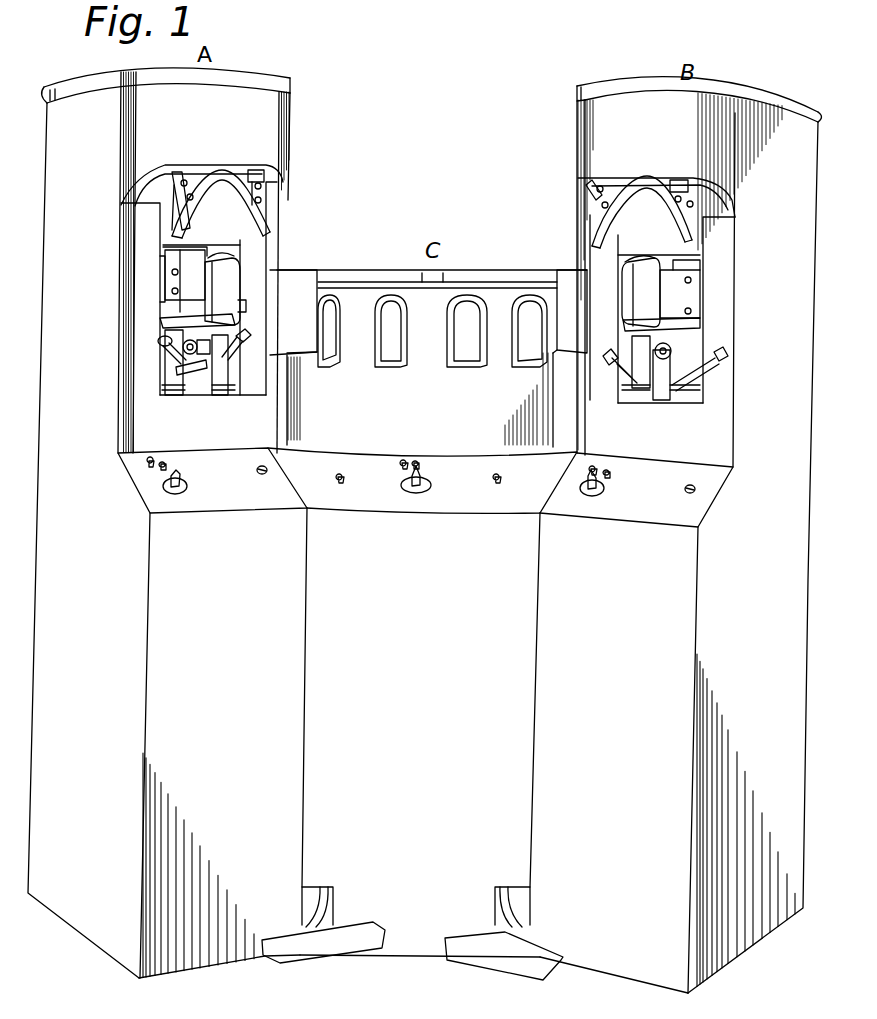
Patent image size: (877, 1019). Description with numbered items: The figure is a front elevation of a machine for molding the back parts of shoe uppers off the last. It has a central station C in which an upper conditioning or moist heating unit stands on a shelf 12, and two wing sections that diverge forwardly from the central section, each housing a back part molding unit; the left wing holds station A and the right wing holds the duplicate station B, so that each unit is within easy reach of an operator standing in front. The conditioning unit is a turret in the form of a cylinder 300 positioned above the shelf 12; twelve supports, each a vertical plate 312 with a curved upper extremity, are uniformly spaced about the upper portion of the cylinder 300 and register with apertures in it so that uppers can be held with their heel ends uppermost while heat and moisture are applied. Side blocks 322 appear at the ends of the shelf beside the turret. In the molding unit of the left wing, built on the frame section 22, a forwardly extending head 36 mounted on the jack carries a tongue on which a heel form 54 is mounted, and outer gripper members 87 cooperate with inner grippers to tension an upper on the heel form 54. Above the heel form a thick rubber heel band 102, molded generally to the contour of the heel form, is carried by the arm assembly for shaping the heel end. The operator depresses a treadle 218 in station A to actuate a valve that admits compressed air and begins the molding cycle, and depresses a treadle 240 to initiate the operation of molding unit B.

The frame section 22 is at (82, 922).
The heel band 102 is at (228, 190).
The head 36 is at (173, 285).
The heel form 54 is at (207, 288).
The outer gripper members 87 is at (162, 342).
The shelf 12 is at (565, 445).
The side support block 322 is at (297, 283).
The cylinder 300 is at (467, 437).
The vertical plate 312 is at (393, 328).
The treadle 218 is at (315, 948).
The treadle 240 is at (503, 960).